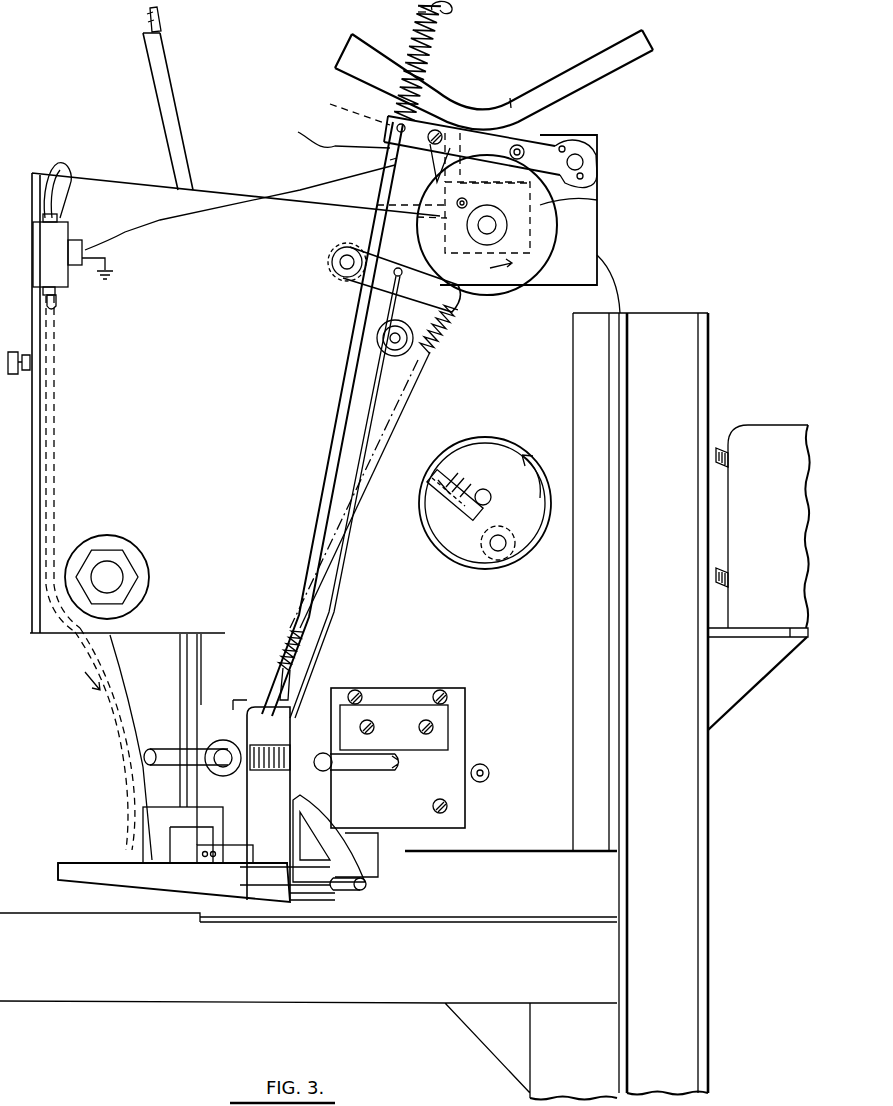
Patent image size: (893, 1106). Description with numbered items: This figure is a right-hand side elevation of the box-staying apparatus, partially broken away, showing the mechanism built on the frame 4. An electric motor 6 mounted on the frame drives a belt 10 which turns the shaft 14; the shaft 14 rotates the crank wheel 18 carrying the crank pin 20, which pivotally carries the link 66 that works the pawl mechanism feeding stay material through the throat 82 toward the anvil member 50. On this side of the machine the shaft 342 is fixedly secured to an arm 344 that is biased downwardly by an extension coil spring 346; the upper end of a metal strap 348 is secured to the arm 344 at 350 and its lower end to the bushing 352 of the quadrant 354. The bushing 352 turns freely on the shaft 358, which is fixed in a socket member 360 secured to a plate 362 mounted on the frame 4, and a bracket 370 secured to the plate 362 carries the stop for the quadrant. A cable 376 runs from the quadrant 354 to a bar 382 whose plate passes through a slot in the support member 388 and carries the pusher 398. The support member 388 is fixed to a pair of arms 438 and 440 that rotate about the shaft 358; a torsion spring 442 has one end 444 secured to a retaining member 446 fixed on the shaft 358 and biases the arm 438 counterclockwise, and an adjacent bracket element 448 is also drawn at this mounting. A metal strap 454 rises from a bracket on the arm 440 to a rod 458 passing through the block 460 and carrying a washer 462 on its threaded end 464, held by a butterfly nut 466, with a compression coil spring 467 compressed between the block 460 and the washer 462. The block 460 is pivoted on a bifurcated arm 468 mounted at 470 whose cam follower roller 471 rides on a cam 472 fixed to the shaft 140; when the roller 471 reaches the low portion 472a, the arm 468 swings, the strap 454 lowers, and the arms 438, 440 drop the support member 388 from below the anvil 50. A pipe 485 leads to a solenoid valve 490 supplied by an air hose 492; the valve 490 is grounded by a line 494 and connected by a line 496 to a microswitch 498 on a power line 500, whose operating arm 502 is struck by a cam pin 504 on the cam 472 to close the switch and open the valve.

The frame 4 is at (283, 969).
The electric motor 6 is at (780, 504).
The belt 10 is at (722, 448).
The shaft 14 is at (481, 489).
The crank wheel 18 is at (527, 519).
The crank pin 20 is at (505, 550).
The anvil member 50 is at (133, 707).
The link 66 is at (436, 490).
The throat 82 is at (180, 133).
The shaft 140 is at (492, 227).
The shaft 342 is at (340, 270).
The arm 344 is at (367, 253).
The extension coil spring 346 is at (440, 343).
The metal strap 348 is at (383, 368).
The securing point 350 is at (398, 268).
The bushing 352 is at (295, 740).
The quadrant 354 is at (360, 853).
The shaft 358 is at (150, 747).
The socket member 360 is at (385, 780).
The plate 362 is at (455, 757).
The bracket 370 is at (393, 715).
The cable 376 is at (380, 835).
The bar 382 is at (233, 853).
The support member 388 is at (72, 862).
The pusher 398 is at (150, 826).
The arm 438 is at (283, 823).
The arm 440 is at (338, 790).
The torsion spring 442 is at (258, 745).
The spring end 444 is at (220, 738).
The retaining member 446 is at (213, 735).
The bracket plate 448 is at (248, 800).
The metal strap 454 is at (333, 437).
The rod 458 is at (392, 135).
The block 460 is at (345, 105).
The washer 462 is at (436, 28).
The threaded end 464 is at (449, 10).
The butterfly nut 466 is at (418, 8).
The compression coil spring 467 is at (431, 59).
The bifurcated arm 468 is at (540, 143).
The pivot 470 is at (581, 162).
The cam follower roller 471 is at (508, 93).
The cam 472 is at (535, 260).
The low portion 472a is at (592, 140).
The pipe 485 is at (70, 166).
The valve 490 is at (66, 238).
The hose 492 is at (58, 304).
The line 494 is at (108, 261).
The line 496 is at (145, 220).
The microswitch 498 is at (392, 162).
The power line 500 is at (161, 24).
The cam follower operating arm 502 is at (394, 206).
The cam pin 504 is at (592, 198).